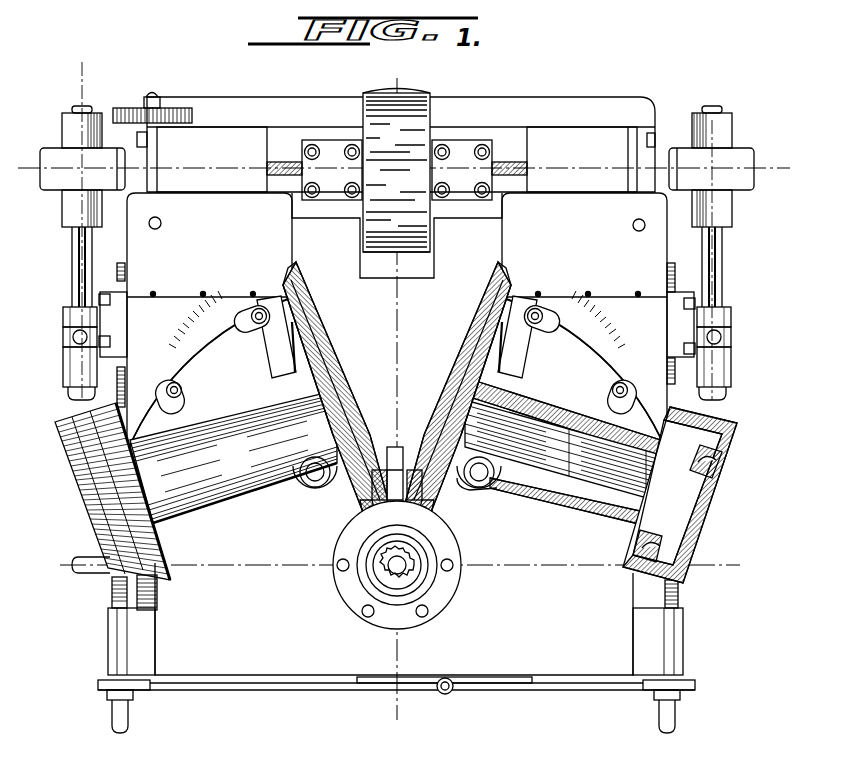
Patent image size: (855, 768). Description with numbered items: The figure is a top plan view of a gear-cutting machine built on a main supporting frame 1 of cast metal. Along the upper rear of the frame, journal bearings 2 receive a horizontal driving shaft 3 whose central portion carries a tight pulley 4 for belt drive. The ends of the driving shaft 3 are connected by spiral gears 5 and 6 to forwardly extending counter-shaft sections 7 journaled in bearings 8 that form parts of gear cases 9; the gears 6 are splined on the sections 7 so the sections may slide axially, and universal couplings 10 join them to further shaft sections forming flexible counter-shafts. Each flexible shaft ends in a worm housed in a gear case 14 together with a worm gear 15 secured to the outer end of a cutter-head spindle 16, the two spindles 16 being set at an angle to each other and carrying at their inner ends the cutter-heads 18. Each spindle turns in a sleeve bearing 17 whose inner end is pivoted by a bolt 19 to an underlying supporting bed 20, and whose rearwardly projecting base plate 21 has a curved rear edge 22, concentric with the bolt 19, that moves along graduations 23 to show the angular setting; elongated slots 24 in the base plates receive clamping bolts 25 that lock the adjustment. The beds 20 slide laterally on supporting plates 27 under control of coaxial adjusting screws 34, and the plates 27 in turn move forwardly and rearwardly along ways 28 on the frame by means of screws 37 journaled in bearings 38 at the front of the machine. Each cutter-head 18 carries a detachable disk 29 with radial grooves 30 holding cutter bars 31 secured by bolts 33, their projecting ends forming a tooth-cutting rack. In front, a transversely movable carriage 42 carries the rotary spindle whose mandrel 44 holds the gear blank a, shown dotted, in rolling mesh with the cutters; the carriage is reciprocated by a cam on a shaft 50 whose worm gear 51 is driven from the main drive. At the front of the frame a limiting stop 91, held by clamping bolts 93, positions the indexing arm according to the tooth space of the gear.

The main supporting frame 1 is at (533, 130).
The journal bearings 2 is at (331, 147).
The driving shaft 3 is at (287, 165).
The tight pulley 4 is at (413, 97).
The spiral gears 5 is at (395, 567).
The spiral gears 6 is at (400, 169).
The counter-shaft sections 7 is at (734, 251).
The bearings 8 is at (62, 212).
The gear cases 9 is at (752, 144).
The universal couplings 10 is at (73, 352).
The gear cases 14 is at (97, 494).
The worm gears 15 is at (672, 553).
The cutter-head spindles 16 is at (546, 493).
The bearings 17 is at (223, 503).
The cutter-heads 18 is at (330, 343).
The pivotal bolts 19 is at (313, 481).
The supporting beds 20 is at (162, 306).
The base plates 21 is at (222, 323).
The curved rear edges 22 is at (187, 352).
The graduations 23 is at (394, 319).
The elongated slots 24 is at (247, 330).
The clamping bolts 25 is at (257, 314).
The supporting plates 27 is at (282, 247).
The ways 28 is at (216, 140).
The detachable disk 29 is at (359, 508).
The radial grooves 30 is at (483, 293).
The cutter bars 31 is at (300, 293).
The bolts 33 is at (401, 468).
The adjusting screws 34 is at (86, 389).
The screws 37 is at (696, 601).
The bearings 38 is at (116, 643).
The carriage 42 is at (277, 660).
The mandrel 44 is at (386, 566).
The shaft 50 is at (83, 576).
The worm gear 51 is at (158, 589).
The limiting stop 91 is at (445, 695).
The clamping bolts 93 is at (417, 684).
The gear blank a is at (388, 581).